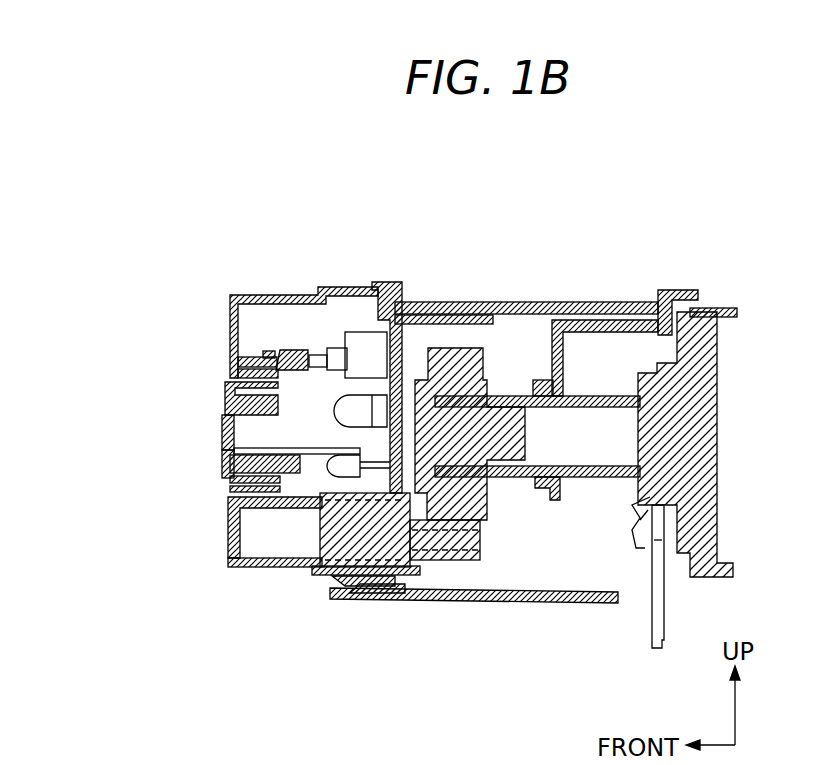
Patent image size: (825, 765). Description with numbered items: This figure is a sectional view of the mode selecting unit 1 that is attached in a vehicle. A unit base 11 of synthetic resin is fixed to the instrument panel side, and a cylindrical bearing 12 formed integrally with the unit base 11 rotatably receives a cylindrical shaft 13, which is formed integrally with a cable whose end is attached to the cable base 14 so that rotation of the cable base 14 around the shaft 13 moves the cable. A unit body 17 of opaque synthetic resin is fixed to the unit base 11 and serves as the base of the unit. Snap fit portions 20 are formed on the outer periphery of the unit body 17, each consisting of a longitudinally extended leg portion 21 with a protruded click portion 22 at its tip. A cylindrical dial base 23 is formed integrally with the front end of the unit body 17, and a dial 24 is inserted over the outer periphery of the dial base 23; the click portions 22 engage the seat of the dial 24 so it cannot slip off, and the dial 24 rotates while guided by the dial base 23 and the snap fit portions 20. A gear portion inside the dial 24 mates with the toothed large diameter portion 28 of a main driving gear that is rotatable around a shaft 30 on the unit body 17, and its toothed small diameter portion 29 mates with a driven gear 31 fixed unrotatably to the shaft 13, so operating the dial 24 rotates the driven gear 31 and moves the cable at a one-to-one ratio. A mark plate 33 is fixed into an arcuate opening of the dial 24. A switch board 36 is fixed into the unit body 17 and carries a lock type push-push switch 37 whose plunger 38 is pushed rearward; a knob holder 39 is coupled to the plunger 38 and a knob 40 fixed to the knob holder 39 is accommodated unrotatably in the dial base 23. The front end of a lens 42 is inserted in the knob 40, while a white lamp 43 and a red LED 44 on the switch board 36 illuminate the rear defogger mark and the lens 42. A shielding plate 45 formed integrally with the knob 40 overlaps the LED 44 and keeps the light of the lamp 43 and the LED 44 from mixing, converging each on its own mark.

The mode selecting unit 1 is at (540, 604).
The unit base 11 is at (630, 302).
The bearing 12 is at (538, 500).
The shaft 13 is at (605, 478).
The cable base 14 is at (717, 393).
The unit body 17 is at (557, 302).
The snap fit portions 20 is at (379, 643).
The leg portion 21 is at (383, 594).
The click portion 22 is at (353, 588).
The dial base 23 is at (262, 567).
The dial 24 is at (235, 568).
The large diameter portion 28 is at (328, 575).
The small diameter portion 29 is at (445, 560).
The shaft 30 is at (290, 567).
The driven gear 31 is at (467, 348).
The mark plate 33 is at (232, 335).
The switch board 36 is at (424, 282).
The switch 37 is at (357, 332).
The plunger 38 is at (322, 357).
The knob holder 39 is at (283, 350).
The knob 40 is at (225, 402).
The lens 42 is at (225, 462).
The lamp 43 is at (333, 410).
The LED 44 is at (322, 450).
The shielding plate 45 is at (227, 420).